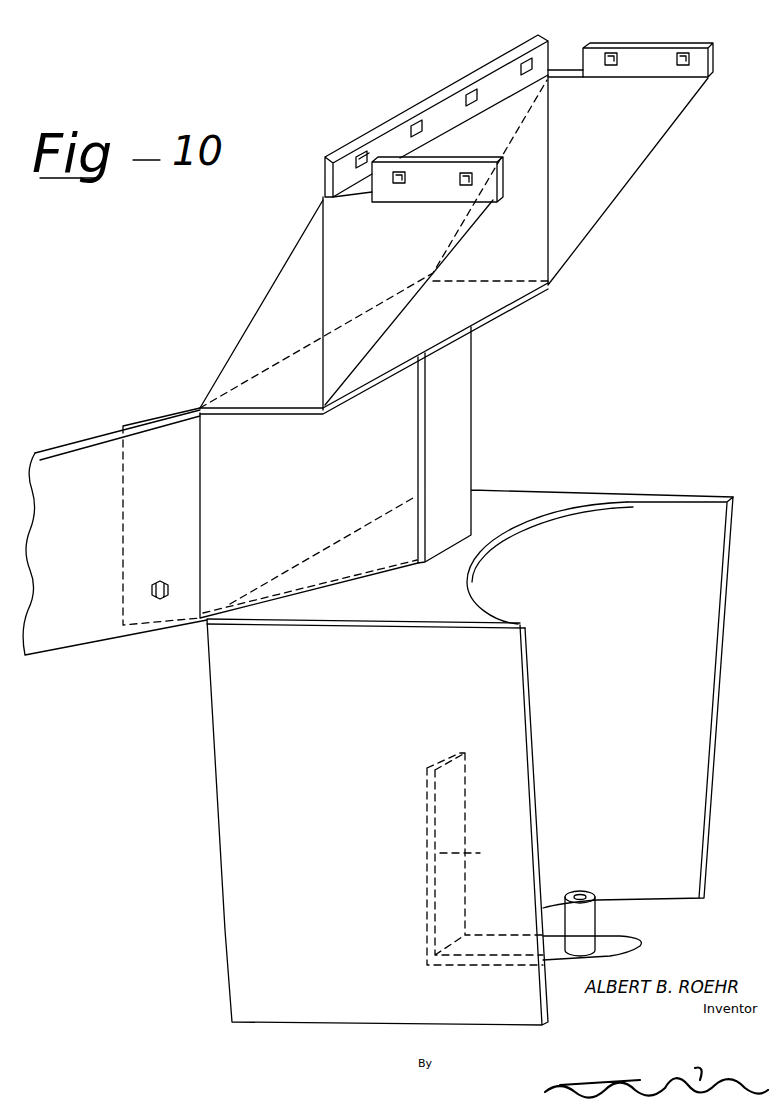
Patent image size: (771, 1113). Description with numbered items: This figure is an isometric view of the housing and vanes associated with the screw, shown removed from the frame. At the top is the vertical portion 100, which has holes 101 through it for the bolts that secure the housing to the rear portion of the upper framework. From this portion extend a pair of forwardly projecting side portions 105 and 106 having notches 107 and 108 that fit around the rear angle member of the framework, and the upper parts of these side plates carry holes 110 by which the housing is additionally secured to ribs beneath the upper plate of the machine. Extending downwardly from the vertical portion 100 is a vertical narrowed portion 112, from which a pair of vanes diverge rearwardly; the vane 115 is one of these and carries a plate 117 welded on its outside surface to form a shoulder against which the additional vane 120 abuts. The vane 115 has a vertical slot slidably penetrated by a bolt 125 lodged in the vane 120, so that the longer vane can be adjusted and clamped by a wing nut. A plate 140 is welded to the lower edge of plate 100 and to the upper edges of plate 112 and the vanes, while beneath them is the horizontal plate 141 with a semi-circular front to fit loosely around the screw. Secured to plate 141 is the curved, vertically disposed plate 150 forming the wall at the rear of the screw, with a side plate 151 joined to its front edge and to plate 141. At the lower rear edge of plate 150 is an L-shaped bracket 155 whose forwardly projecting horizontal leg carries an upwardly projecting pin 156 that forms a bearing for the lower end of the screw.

The vertical portion 100 is at (374, 245).
The holes 101 is at (520, 63).
The forwardly projecting portion 105 is at (628, 180).
The forwardly projecting portion 106 is at (299, 304).
The notch 107 is at (348, 208).
The notch 108 is at (563, 68).
The holes 110 is at (685, 54).
The vertical narrowed portion 112 is at (575, 445).
The vane 115 is at (146, 418).
The plates 117 is at (309, 515).
The vane 120 is at (115, 532).
The bolt 125 is at (172, 586).
The plate 140 is at (374, 348).
The plate 141 is at (366, 609).
The semi-circular plate 150 is at (600, 702).
The side plate 151 is at (377, 822).
The L-shaped bracket 155 is at (617, 946).
The pin 156 is at (586, 891).